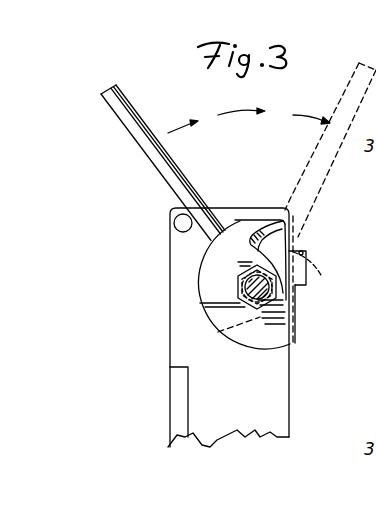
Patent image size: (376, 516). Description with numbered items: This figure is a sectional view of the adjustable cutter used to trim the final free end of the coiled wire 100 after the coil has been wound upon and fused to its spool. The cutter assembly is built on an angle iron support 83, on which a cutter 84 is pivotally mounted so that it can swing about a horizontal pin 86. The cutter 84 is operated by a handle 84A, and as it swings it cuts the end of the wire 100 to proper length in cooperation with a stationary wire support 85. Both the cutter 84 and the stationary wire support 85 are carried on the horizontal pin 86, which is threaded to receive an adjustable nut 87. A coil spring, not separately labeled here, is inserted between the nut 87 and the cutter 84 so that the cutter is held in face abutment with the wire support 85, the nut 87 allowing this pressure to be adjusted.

The angle iron support 83 is at (207, 385).
The cutter 84 is at (207, 317).
The handle 84A is at (138, 110).
The stationary wire support 85 is at (298, 286).
The horizontal pin 86 is at (247, 291).
The adjustable nut 87 is at (238, 282).
The coiled wire 100 is at (303, 252).